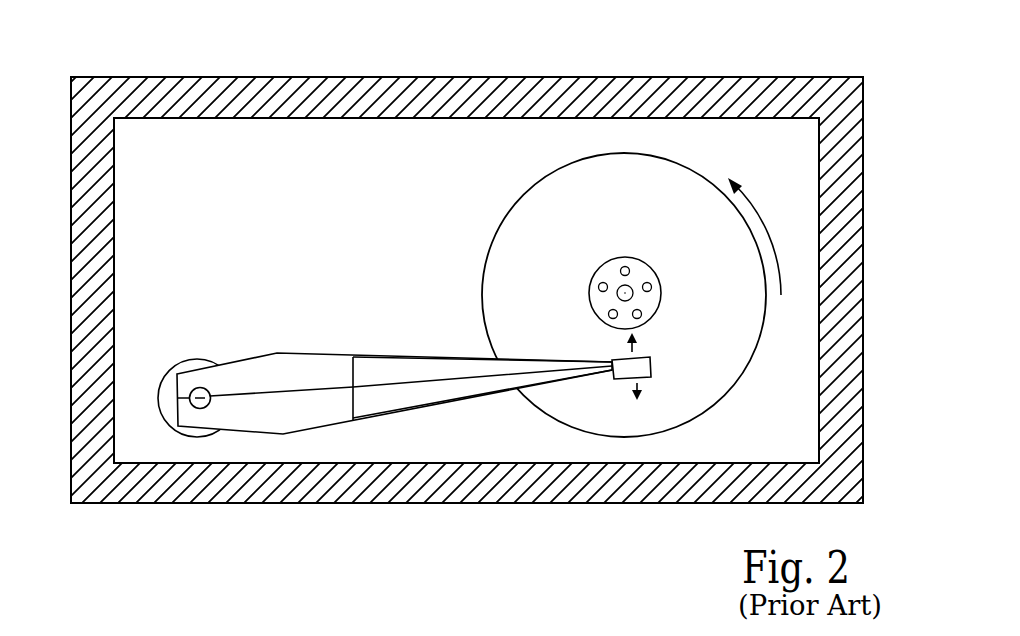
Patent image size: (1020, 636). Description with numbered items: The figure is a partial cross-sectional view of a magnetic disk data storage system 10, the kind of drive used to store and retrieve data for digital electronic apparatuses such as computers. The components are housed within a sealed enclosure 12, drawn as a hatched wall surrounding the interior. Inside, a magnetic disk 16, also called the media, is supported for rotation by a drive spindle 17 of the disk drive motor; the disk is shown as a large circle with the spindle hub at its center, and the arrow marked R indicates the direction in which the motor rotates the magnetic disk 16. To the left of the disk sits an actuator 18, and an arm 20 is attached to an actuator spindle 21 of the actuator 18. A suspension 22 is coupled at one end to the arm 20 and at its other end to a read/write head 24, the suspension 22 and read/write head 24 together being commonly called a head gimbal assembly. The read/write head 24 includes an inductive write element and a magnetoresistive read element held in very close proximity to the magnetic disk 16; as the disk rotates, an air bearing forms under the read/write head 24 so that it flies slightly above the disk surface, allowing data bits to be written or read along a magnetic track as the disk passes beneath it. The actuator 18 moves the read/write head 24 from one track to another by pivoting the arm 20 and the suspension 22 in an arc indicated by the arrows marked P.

The magnetic disk data storage system 10 is at (838, 61).
The sealed enclosure 12 is at (447, 495).
The magnetic disk 16 is at (647, 210).
The drive spindle 17 is at (648, 273).
The actuator 18 is at (205, 361).
The arm 20 is at (321, 365).
The actuator spindle 21 is at (206, 406).
The suspension 22 is at (422, 402).
The read/write head 24 is at (652, 368).